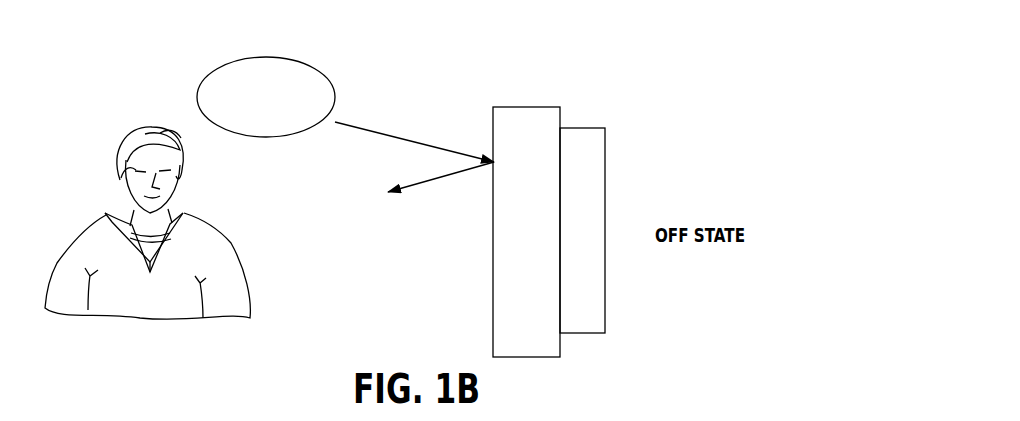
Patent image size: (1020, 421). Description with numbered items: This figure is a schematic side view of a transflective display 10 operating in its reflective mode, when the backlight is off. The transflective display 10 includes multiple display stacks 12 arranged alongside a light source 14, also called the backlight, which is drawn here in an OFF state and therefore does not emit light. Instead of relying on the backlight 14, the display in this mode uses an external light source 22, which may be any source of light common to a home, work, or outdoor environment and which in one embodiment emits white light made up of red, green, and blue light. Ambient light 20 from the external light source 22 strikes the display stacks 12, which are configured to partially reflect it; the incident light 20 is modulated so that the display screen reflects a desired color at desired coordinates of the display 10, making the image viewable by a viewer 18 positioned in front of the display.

The transflective display 10 is at (594, 102).
The display stacks 12 is at (508, 327).
The light source 14 is at (583, 165).
The viewer 18 is at (80, 248).
The ambient light 20 is at (440, 176).
The external light source 22 is at (266, 57).